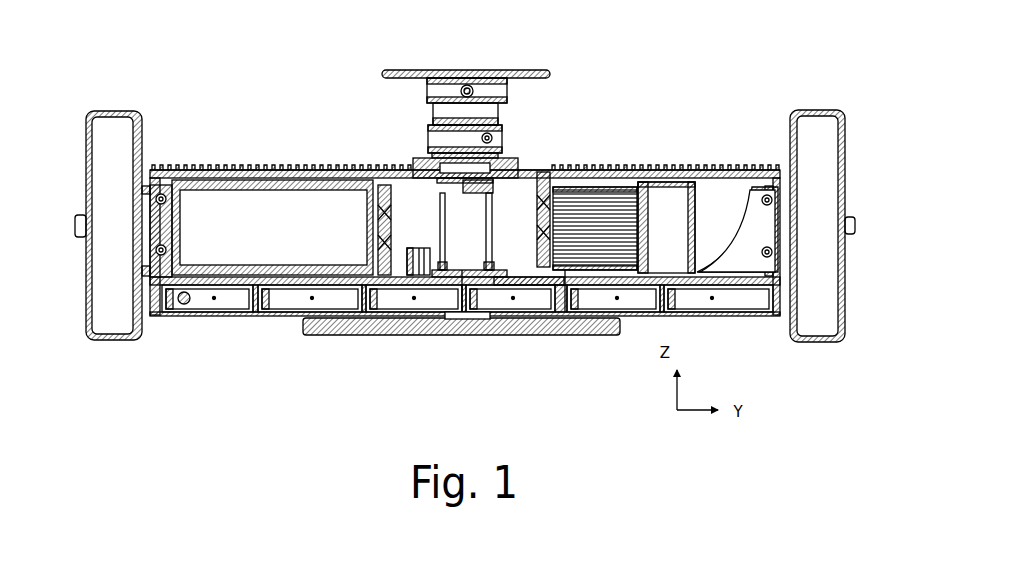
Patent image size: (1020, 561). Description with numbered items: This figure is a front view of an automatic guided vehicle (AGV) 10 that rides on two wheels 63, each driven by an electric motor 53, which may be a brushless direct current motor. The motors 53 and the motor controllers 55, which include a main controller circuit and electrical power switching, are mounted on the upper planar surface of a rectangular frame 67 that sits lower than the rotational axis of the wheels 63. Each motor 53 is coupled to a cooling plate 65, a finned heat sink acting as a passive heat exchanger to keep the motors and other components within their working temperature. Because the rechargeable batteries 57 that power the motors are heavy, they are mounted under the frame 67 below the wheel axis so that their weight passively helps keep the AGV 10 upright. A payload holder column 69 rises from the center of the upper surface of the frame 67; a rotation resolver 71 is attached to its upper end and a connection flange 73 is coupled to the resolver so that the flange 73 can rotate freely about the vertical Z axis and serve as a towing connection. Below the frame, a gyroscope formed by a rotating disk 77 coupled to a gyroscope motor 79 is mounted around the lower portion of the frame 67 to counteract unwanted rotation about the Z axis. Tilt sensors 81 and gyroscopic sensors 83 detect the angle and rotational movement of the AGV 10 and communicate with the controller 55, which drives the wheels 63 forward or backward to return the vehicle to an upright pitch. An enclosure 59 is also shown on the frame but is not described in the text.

The automatic guided vehicle (AGV) 10 is at (262, 78).
The electric motor 53 is at (718, 200).
The motor controller 55 is at (667, 200).
The rechargeable batteries 57 is at (332, 300).
The electronics box 59 is at (250, 202).
The wheel 63 is at (122, 140).
The cooling plate 65 is at (593, 165).
The frame 67 is at (530, 275).
The payload holder column 69 is at (450, 238).
The rotation resolver 71 is at (424, 172).
The connection flange 73 is at (495, 92).
The rotating disk 77 is at (303, 326).
The gyroscope motor 79 is at (468, 320).
The tilt sensor 81 is at (413, 248).
The gyroscopic sensor 83 is at (425, 248).